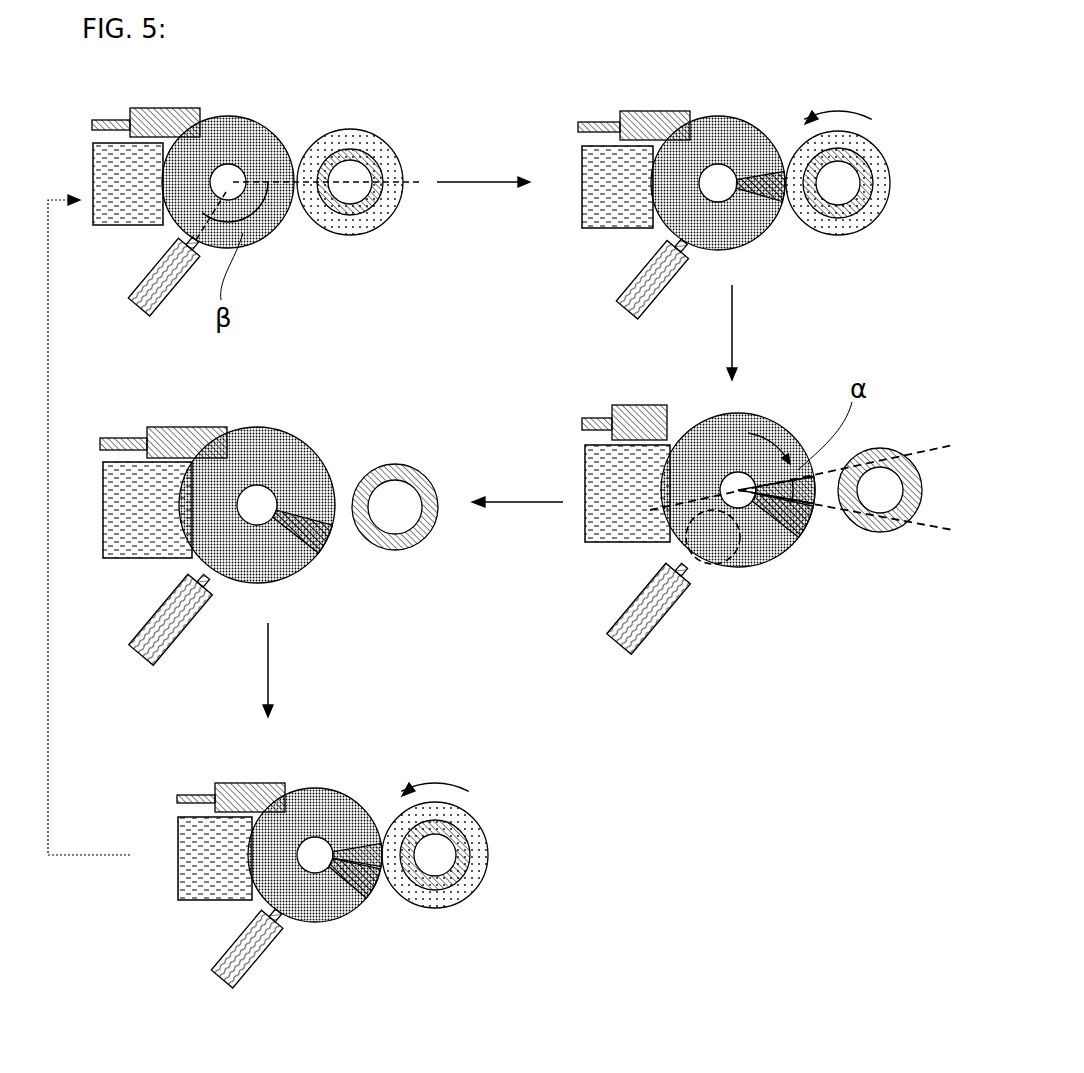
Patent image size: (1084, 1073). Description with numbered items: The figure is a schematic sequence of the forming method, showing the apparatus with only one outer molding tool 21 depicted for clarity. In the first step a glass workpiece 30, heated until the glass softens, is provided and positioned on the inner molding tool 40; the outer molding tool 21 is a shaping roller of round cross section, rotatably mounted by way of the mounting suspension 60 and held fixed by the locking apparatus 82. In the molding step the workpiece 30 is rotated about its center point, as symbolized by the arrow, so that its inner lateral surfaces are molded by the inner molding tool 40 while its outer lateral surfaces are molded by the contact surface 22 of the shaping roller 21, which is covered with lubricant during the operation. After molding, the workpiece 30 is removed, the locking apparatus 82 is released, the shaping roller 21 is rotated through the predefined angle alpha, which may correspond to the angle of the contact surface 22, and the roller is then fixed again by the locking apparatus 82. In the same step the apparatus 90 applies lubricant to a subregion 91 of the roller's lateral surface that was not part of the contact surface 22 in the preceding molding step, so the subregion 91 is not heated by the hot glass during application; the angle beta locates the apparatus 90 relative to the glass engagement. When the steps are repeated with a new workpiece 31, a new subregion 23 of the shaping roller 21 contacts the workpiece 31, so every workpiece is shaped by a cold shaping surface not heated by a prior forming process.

The outer molding tool 21 is at (247, 130).
The contact surface 22 is at (759, 173).
The new subregion 23 is at (362, 838).
The glass workpiece 30 is at (368, 147).
The new workpiece 31 is at (422, 898).
The inner molding tool 40 is at (330, 220).
The mounting suspension 60 is at (120, 222).
The locking apparatus 82 is at (172, 108).
The apparatus for applying the lubricating oil 90 is at (128, 310).
The subregion 91 is at (700, 567).